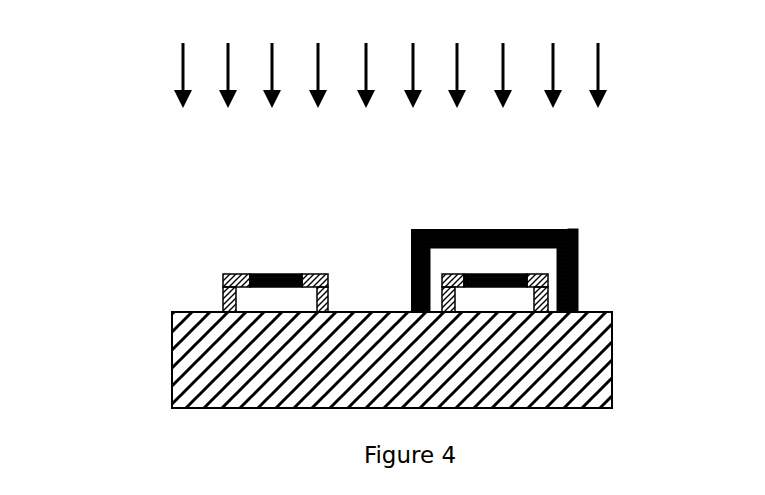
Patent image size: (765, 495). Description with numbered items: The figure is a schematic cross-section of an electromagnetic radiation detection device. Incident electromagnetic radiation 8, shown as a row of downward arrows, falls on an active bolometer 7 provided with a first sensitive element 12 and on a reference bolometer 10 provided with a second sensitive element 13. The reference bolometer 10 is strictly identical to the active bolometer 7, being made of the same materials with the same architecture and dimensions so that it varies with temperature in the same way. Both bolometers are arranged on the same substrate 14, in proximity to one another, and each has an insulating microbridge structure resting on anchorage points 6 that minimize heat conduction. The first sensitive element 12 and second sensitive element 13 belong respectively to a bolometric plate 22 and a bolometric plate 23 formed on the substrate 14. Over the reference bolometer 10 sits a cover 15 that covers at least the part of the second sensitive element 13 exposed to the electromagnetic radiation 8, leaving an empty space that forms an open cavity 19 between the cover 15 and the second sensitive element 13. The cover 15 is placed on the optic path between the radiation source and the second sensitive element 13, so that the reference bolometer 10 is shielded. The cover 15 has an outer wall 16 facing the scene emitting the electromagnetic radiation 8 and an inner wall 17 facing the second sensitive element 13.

The anchorage points 6 is at (225, 300).
The active bolometer 7 is at (302, 248).
The electromagnetic radiation 8 is at (598, 72).
The reference bolometer 10 is at (510, 258).
The first sensitive element 12 is at (277, 274).
The second sensitive element 13 is at (485, 274).
The substrate 14 is at (583, 365).
The cover 15 is at (587, 248).
The outer wall 16 is at (578, 272).
The inner wall 17 is at (455, 229).
The open cavity 19 is at (543, 257).
The bolometric plate 22 is at (230, 275).
The bolometric plate 23 is at (442, 280).